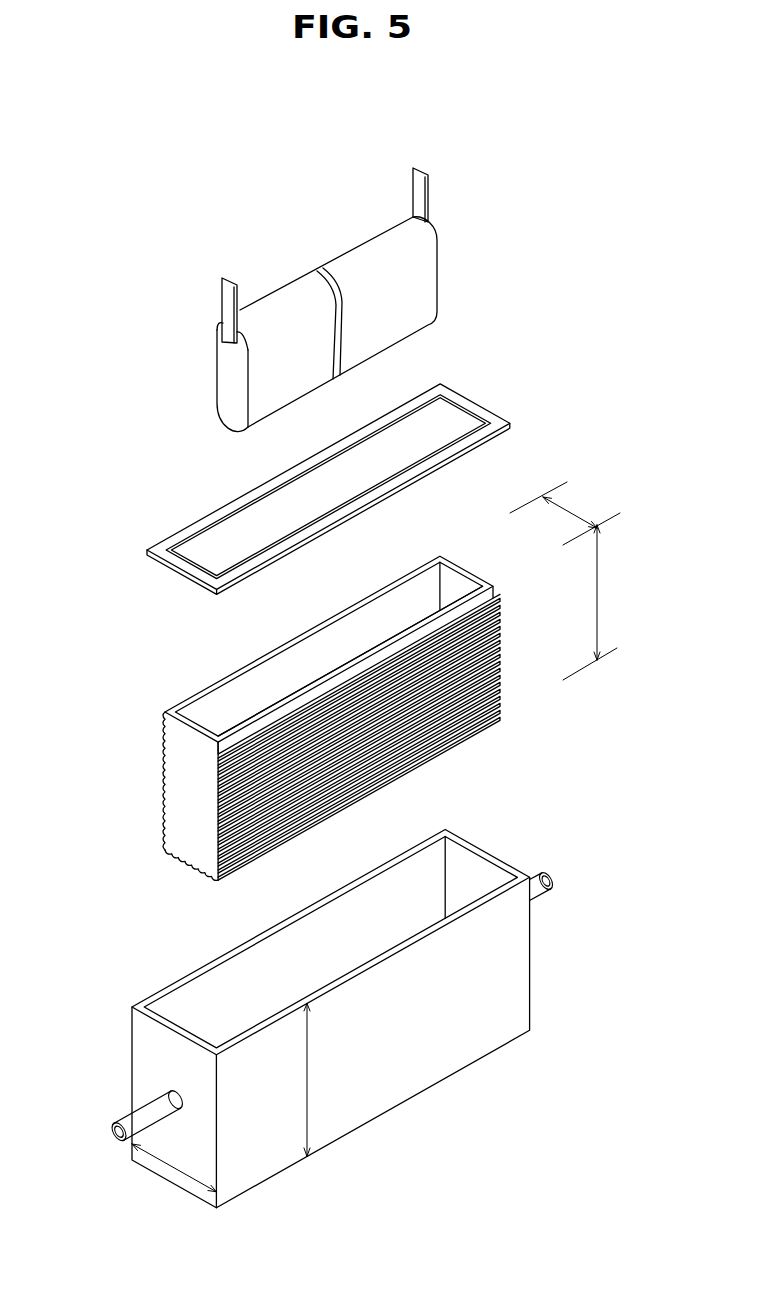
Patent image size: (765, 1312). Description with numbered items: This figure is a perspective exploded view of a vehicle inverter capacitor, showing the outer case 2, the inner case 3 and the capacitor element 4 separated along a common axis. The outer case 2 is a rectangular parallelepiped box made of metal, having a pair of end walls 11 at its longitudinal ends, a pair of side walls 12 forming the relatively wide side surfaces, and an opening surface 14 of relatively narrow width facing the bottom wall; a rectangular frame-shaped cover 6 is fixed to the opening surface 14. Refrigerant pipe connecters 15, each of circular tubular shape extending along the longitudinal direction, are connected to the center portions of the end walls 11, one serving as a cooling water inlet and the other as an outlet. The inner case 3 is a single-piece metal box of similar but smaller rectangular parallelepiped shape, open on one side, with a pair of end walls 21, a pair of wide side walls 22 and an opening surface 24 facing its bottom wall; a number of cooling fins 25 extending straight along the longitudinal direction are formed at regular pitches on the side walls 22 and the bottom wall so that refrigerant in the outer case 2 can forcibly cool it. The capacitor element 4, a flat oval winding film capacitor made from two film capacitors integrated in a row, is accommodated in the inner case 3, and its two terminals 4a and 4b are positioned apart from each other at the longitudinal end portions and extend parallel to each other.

The outer case 2 is at (332, 985).
The inner case 3 is at (344, 693).
The capacitor element 4 is at (445, 250).
The terminal 4a is at (220, 298).
The terminal 4b is at (413, 192).
The cover 6 is at (465, 398).
The end wall 11 is at (148, 1048).
The side wall 12 is at (187, 975).
The opening surface 14 is at (348, 908).
The refrigerant pipe connecter 15 is at (127, 1122).
The end wall 21 is at (455, 558).
The side wall 22 is at (347, 658).
The opening surface 24 is at (308, 655).
The cooling fin 25 is at (500, 700).